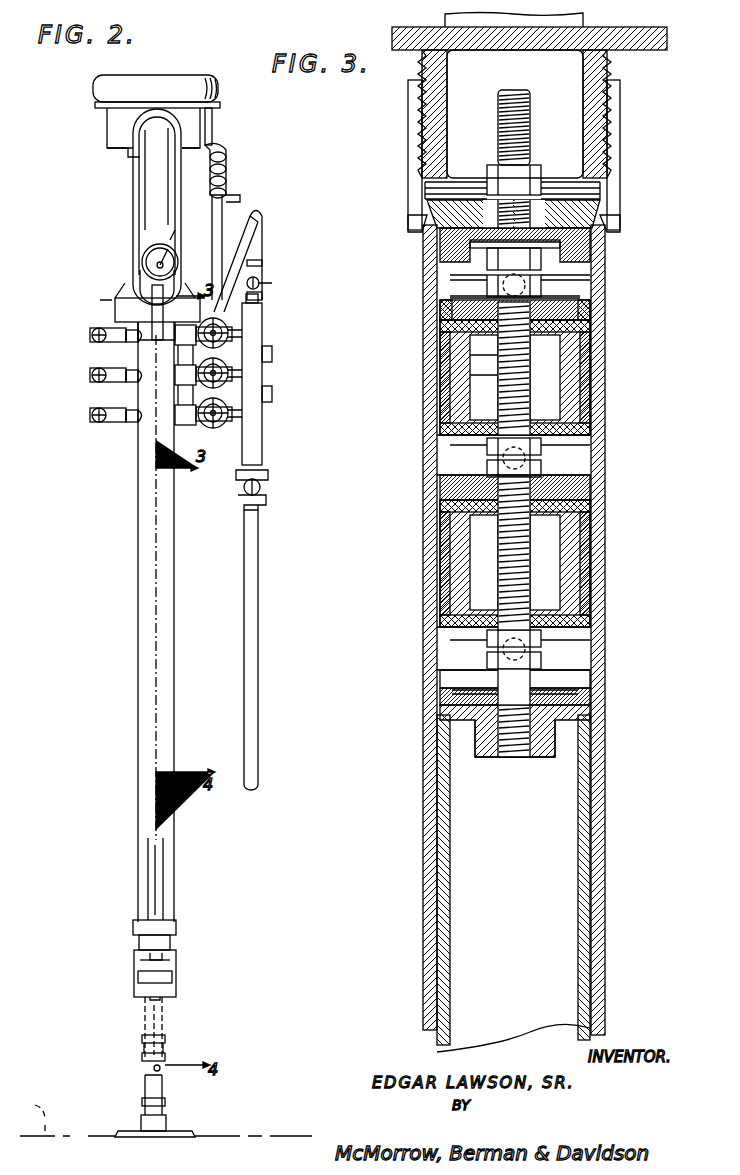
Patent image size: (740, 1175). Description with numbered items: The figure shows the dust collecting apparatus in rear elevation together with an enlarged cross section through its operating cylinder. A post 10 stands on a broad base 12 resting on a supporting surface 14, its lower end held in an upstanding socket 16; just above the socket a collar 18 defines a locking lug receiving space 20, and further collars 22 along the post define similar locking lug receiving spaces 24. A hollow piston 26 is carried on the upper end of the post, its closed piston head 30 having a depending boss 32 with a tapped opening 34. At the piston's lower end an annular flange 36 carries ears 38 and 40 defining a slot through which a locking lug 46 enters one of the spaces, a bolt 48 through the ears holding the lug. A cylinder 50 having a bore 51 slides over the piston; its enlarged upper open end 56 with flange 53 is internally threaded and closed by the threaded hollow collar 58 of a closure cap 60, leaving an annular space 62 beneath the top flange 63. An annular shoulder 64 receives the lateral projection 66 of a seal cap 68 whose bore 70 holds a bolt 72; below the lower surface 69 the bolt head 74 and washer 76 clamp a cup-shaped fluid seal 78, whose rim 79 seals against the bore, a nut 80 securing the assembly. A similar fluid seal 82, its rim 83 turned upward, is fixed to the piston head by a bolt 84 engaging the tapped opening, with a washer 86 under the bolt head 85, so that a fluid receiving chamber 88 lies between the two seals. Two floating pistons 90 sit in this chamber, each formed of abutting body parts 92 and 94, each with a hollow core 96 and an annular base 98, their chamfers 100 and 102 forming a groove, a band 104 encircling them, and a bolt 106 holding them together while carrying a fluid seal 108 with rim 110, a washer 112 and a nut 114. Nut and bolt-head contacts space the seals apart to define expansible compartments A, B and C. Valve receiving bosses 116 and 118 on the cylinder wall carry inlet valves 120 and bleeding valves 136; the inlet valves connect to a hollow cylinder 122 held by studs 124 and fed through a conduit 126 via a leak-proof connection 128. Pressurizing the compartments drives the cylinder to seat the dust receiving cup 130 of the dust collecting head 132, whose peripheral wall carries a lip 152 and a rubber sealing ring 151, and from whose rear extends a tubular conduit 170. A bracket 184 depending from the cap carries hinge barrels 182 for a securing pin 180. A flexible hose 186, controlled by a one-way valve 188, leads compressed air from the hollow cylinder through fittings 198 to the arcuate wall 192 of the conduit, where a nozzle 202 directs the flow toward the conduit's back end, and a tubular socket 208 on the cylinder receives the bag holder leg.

In FIG. 2, the post 10 is at (164, 1025).
In FIG. 2, the base 12 is at (185, 1131).
In FIG. 2, the supporting surface 14 is at (30, 1116).
In FIG. 2, the socket 16 is at (140, 1122).
In FIG. 2, the collar 18 is at (165, 1103).
In FIG. 2, the locking lug receiving space 20 is at (165, 1110).
In FIG. 2, the collars 22 is at (167, 1040).
In FIG. 2, the locking lug receiving spaces 24 is at (142, 1047).
In FIG. 2, the piston 26 is at (131, 941).
In FIG. 3, the piston 26 is at (378, 938).
In FIG. 3, the piston head 30 is at (592, 700).
In FIG. 3, the boss 32 is at (556, 740).
In FIG. 3, the tapped opening 34 is at (498, 738).
In FIG. 2, the annular flange 36 is at (178, 962).
In FIG. 2, the ear 38 is at (140, 968).
In FIG. 2, the ear 40 is at (145, 992).
In FIG. 2, the locking lug 46 is at (175, 975).
In FIG. 2, the bolt 48 is at (172, 945).
In FIG. 2, the cylinder 50 is at (136, 707).
In FIG. 3, the cylinder 50 is at (391, 867).
In FIG. 3, the bore 51 is at (440, 835).
In FIG. 3, the flange 53 is at (622, 141).
In FIG. 3, the upper open end 56 is at (608, 82).
In FIG. 3, the collar 58 is at (420, 141).
In FIG. 3, the closure cap 60 is at (392, 36).
In FIG. 3, the annular space 62 is at (450, 105).
In FIG. 3, the top flange 63 is at (415, 52).
In FIG. 3, the annular shoulder 64 is at (425, 212).
In FIG. 3, the lateral projection 66 is at (612, 217).
In FIG. 3, the seal cap 68 is at (445, 235).
In FIG. 3, the lower surface 69 is at (592, 240).
In FIG. 3, the bore 70 is at (487, 182).
In FIG. 3, the bolt 72 is at (532, 158).
In FIG. 3, the head 74 is at (440, 290).
In FIG. 3, the washer 76 is at (487, 258).
In FIG. 3, the fluid seal 78 is at (562, 250).
In FIG. 3, the annular rim 79 is at (560, 277).
In FIG. 3, the nut 80 is at (540, 175).
In FIG. 3, the fluid seal 82 is at (440, 713).
In FIG. 3, the annular rim 83 is at (440, 678).
In FIG. 3, the bolt 84 is at (505, 760).
In FIG. 3, the bolt head 85 is at (570, 680).
In FIG. 3, the washer 86 is at (440, 692).
In FIG. 3, the fluid receiving chamber 88 is at (445, 560).
In FIG. 3, the floating piston 90 is at (395, 441).
In FIG. 3, the body part 92 is at (580, 352).
In FIG. 3, the body part 94 is at (582, 405).
In FIG. 3, the hollow core 96 is at (465, 347).
In FIG. 3, the annular base 98 is at (592, 327).
In FIG. 3, the chamfer 100 is at (482, 378).
In FIG. 3, the chamfer 102 is at (455, 350).
In FIG. 3, the band 104 is at (440, 390).
In FIG. 3, the bolt 106 is at (543, 448).
In FIG. 3, the fluid seal 108 is at (440, 316).
In FIG. 3, the annular rim 110 is at (592, 302).
In FIG. 3, the washer 112 is at (440, 300).
In FIG. 3, the nut 114 is at (600, 284).
In FIG. 2, the valve receiving boss 116 is at (178, 340).
In FIG. 2, the valve receiving boss 118 is at (132, 342).
In FIG. 2, the valve 120 is at (262, 298).
In FIG. 2, the hollow cylinder 122 is at (264, 320).
In FIG. 2, the bolts or studs 124 is at (232, 360).
In FIG. 2, the conduit 126 is at (262, 622).
In FIG. 2, the leak-proof connection 128 is at (270, 489).
In FIG. 2, the dust receiving cup 130 is at (214, 125).
In FIG. 2, the dust collecting head 132 is at (128, 178).
In FIG. 2, the bleeding valve 136 is at (86, 375).
In FIG. 2, the sealing ring 151 is at (95, 91).
In FIG. 2, the lip 152 is at (100, 106).
In FIG. 2, the tubular conduit 170 is at (145, 200).
In FIG. 2, the securing pin 180 is at (112, 310).
In FIG. 2, the hinge barrels 182 is at (118, 290).
In FIG. 2, the bracket 184 is at (130, 275).
In FIG. 2, the flexible hose 186 is at (260, 225).
In FIG. 2, the one-way valve 188 is at (262, 280).
In FIG. 2, the wall 192 is at (176, 222).
In FIG. 2, the fittings 198 is at (228, 178).
In FIG. 2, the nozzle 202 is at (168, 255).
In FIG. 2, the tubular socket 208 is at (165, 883).
In FIG. 3, the fluid receiving compartment A is at (412, 290).
In FIG. 3, the fluid receiving compartment B is at (393, 648).
In FIG. 3, the fluid receiving compartment C is at (400, 463).